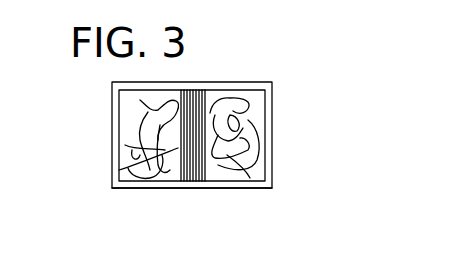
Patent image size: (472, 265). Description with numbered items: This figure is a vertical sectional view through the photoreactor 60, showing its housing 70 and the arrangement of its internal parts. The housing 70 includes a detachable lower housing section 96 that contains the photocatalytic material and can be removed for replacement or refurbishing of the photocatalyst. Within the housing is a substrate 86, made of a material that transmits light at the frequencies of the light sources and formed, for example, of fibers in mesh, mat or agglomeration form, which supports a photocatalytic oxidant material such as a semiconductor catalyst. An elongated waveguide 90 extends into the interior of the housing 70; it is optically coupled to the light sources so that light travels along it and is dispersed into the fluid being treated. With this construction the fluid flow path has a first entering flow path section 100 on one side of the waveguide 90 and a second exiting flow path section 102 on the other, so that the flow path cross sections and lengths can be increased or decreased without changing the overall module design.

The photoreactor 60 is at (233, 81).
The housing 70 is at (133, 189).
The lower housing section 96 is at (112, 127).
The elongated waveguide 90 is at (194, 181).
The first entering flow path section 100 is at (140, 100).
The substrate 86 is at (125, 168).
The second exiting flow path section 102 is at (260, 116).